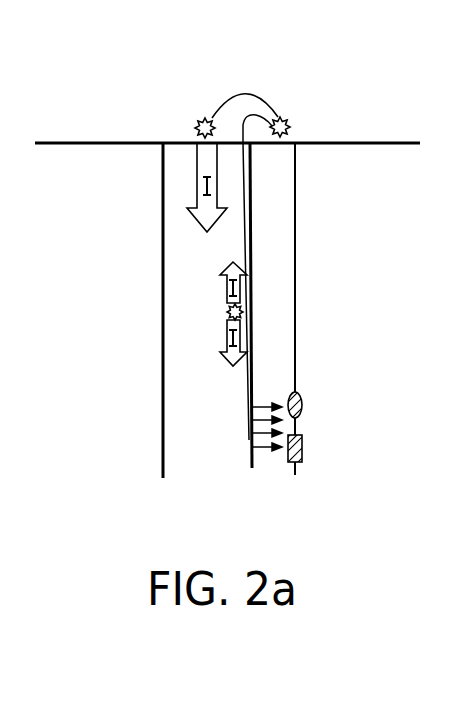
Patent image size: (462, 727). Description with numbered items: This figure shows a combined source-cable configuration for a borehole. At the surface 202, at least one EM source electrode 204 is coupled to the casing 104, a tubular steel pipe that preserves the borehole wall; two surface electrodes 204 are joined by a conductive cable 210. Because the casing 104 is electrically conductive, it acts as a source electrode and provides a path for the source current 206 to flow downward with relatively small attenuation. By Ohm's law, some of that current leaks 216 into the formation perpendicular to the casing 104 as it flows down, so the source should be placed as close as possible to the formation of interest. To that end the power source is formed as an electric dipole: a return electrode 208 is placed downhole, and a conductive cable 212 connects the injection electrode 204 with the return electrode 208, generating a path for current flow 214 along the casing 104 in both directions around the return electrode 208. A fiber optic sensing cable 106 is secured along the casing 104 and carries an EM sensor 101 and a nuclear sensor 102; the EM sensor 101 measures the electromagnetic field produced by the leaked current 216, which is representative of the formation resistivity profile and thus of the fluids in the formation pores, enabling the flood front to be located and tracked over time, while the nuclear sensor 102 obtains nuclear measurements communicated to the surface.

The EM sensor 101 is at (302, 447).
The nuclear sensor 102 is at (302, 405).
The casing 104 is at (163, 250).
The fiber optic sensing cable 106 is at (295, 237).
The surface 202 is at (57, 143).
The EM source electrode 204 is at (203, 118).
The source current 206 is at (197, 181).
The return electrode 208 is at (243, 313).
The conductive cable 210 is at (246, 92).
The conductive cable 212 is at (243, 192).
The current flow 214 is at (243, 283).
The current leakage 216 is at (252, 449).